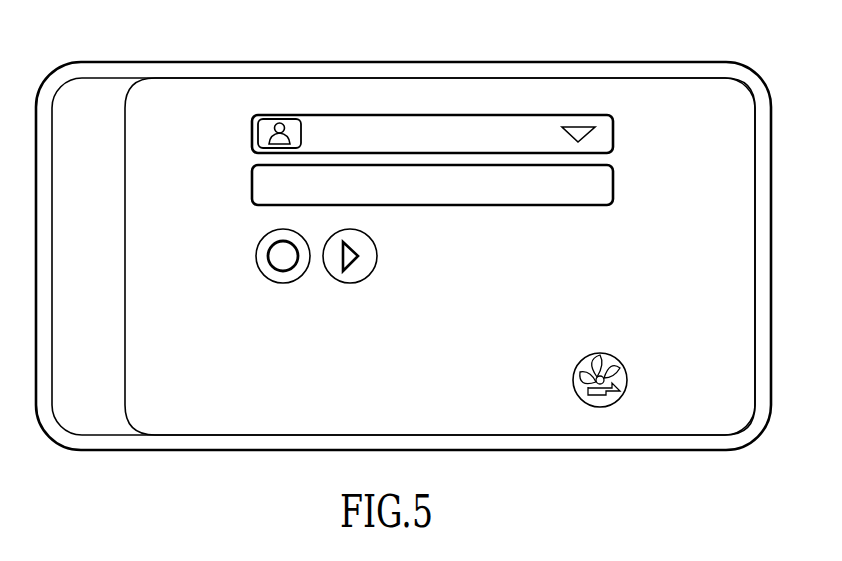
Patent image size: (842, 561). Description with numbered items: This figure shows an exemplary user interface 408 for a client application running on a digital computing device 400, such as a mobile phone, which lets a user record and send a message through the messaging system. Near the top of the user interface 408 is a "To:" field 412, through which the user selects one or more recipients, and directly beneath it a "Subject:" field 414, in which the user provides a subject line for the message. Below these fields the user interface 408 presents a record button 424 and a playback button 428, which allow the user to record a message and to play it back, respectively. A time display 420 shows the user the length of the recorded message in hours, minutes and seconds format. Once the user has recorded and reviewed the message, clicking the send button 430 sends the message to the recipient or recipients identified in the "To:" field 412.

The digital computing device 400 is at (660, 61).
The user interface 408 is at (647, 157).
The "To:" field 412 is at (470, 130).
The "Subject:" field 414 is at (533, 185).
The time display 420 is at (432, 392).
The record button 424 is at (270, 257).
The playback button 428 is at (343, 258).
The send button 430 is at (603, 407).